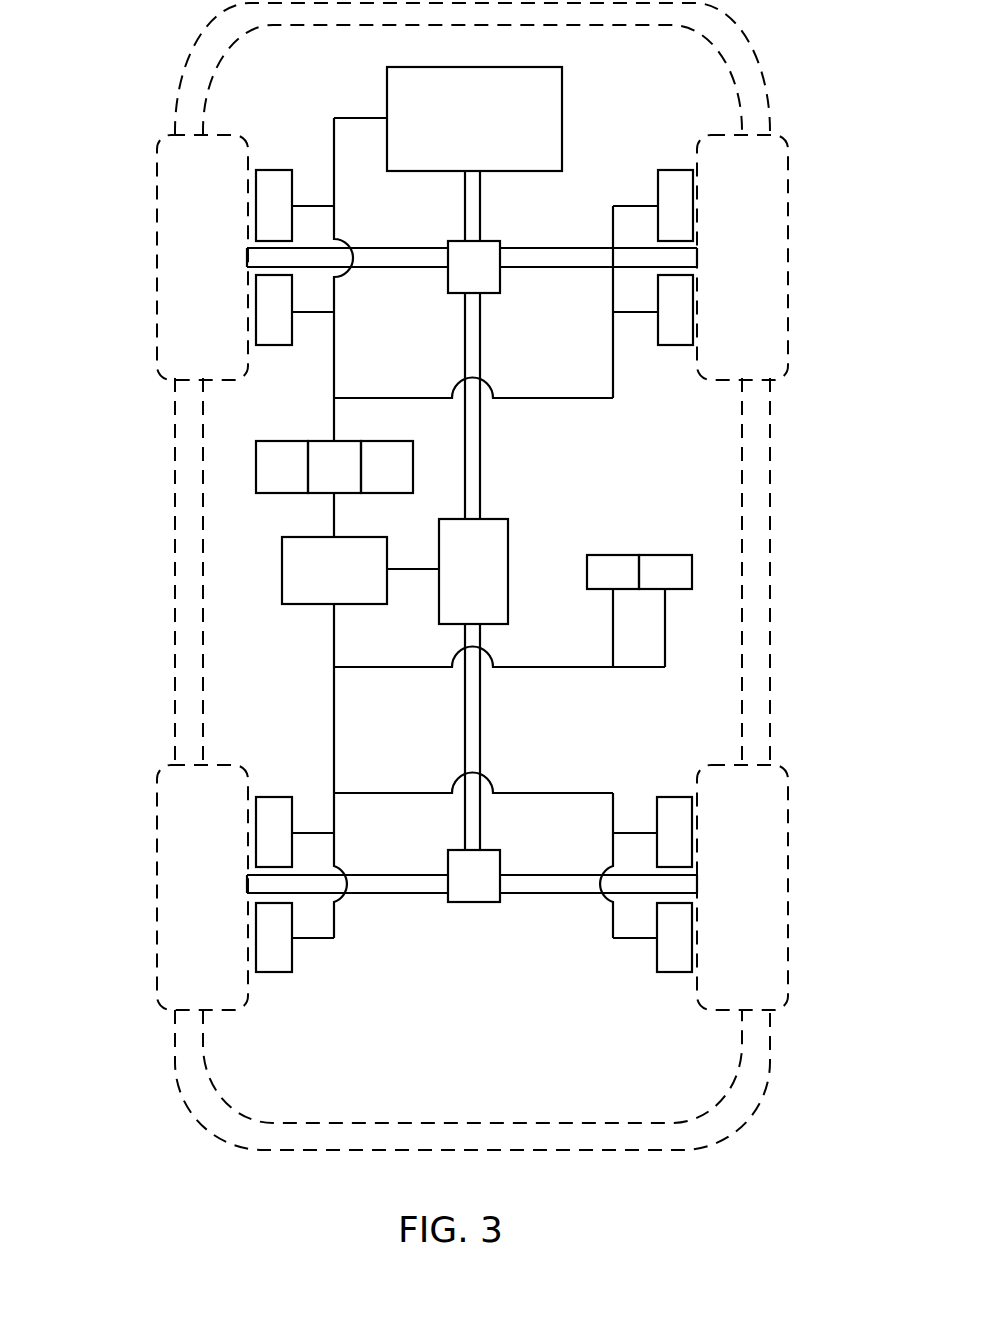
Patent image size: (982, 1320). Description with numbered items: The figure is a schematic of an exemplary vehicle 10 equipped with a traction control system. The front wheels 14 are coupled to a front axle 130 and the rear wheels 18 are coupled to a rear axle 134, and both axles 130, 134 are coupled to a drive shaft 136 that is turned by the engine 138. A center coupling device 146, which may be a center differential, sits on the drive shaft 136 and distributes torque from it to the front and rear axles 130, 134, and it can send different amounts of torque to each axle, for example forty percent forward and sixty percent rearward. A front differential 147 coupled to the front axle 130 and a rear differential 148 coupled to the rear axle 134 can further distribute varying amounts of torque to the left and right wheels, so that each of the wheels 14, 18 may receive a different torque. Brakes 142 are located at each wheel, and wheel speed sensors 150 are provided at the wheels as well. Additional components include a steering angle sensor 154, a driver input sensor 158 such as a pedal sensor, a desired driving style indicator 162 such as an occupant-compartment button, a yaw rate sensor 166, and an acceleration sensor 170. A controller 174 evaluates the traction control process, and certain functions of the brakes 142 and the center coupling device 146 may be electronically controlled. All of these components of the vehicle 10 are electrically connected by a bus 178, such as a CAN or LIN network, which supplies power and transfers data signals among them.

The vehicle 10 is at (126, 1088).
The front wheels 14 is at (177, 183).
The rear wheels 18 is at (177, 812).
The front axle 130 is at (413, 257).
The rear axle 134 is at (395, 885).
The drive shaft 136 is at (482, 437).
The engine 138 is at (496, 131).
The brakes 142 is at (273, 188).
The center coupling device 146 is at (496, 583).
The front differential 147 is at (482, 257).
The rear differential 148 is at (465, 885).
The wheel speed sensors 150 is at (273, 325).
The steering angle sensor 154 is at (296, 475).
The driver input sensor 158 is at (348, 475).
The style indicator 162 is at (401, 475).
The yaw rate sensor 166 is at (627, 580).
The acceleration sensor 170 is at (679, 580).
The controller 174 is at (357, 582).
The bus 178 is at (565, 400).